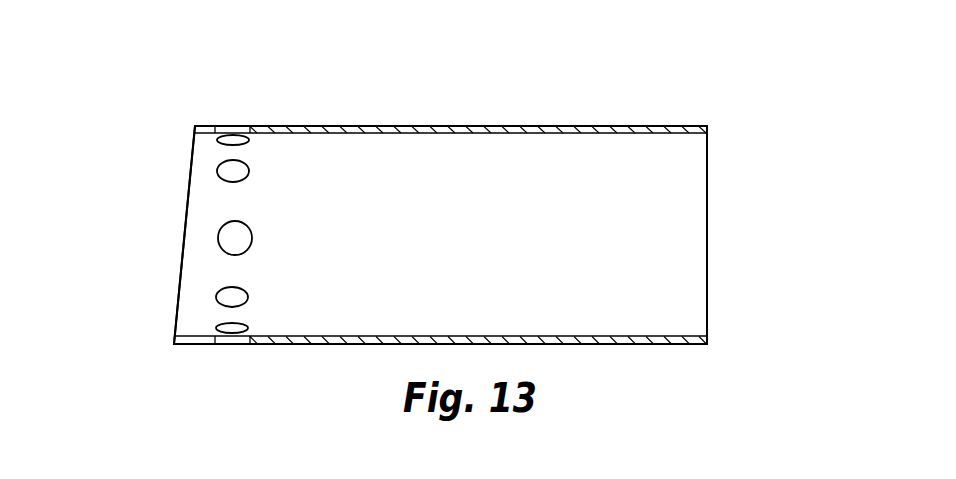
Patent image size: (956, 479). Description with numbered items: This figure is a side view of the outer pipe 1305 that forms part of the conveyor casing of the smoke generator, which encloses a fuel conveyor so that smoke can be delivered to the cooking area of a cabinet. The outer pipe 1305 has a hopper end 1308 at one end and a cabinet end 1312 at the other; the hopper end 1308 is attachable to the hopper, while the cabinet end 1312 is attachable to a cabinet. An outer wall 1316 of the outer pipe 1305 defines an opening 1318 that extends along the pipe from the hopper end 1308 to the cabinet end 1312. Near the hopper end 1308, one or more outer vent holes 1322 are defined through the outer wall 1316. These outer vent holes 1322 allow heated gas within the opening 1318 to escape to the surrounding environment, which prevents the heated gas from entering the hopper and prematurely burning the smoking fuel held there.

The outer pipe 1305 is at (465, 218).
The hopper end 1308 is at (181, 254).
The cabinet end 1312 is at (707, 236).
The outer wall 1316 is at (610, 132).
The opening 1318 is at (437, 183).
The outer vent holes 1322 is at (230, 298).